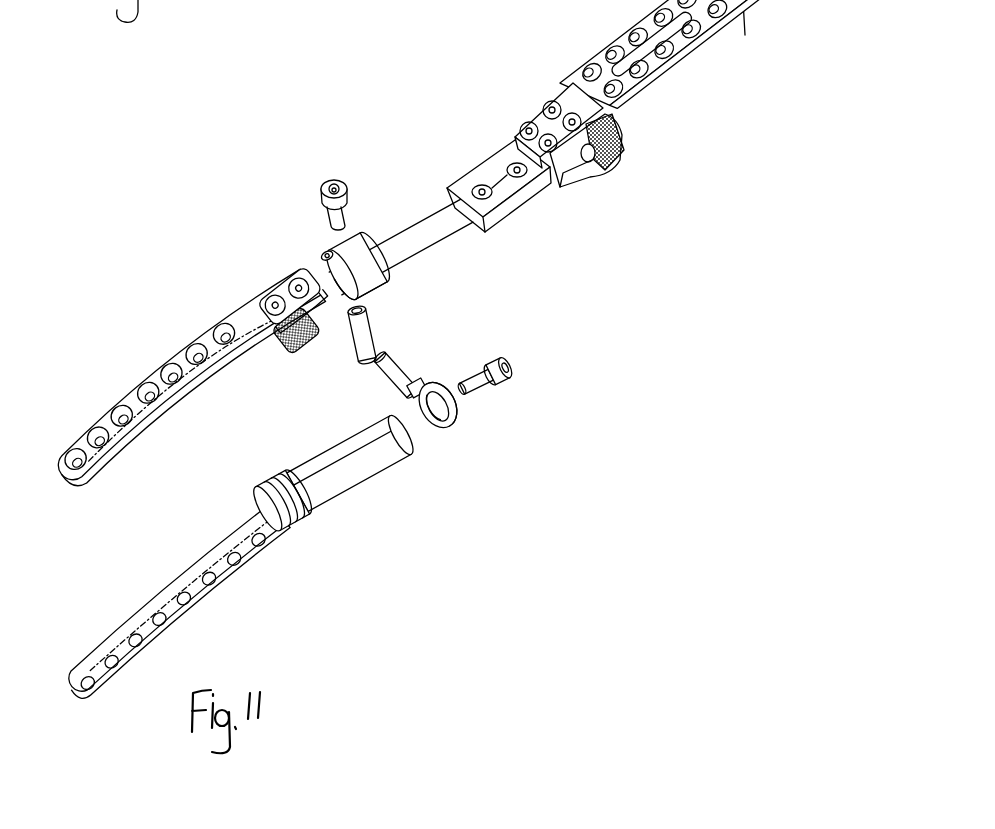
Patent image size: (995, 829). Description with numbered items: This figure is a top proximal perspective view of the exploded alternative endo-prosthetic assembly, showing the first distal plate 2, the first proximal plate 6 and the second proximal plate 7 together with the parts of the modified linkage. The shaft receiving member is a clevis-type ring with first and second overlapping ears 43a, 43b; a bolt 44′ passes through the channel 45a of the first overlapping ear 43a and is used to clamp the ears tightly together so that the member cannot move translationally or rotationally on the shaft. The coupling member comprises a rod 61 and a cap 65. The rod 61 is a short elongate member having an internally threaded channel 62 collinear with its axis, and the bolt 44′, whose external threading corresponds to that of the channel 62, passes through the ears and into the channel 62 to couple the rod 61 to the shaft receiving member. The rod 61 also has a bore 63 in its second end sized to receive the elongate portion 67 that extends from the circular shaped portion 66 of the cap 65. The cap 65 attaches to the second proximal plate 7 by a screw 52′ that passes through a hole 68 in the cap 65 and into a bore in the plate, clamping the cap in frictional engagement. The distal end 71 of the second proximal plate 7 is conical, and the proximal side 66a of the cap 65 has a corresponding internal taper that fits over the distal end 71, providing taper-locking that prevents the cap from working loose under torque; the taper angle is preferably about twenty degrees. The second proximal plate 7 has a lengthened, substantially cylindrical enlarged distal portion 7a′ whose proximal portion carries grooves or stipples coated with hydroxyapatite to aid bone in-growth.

The first distal plate 2 is at (578, 85).
The first proximal plate 6 is at (185, 360).
The second proximal plate 7 is at (220, 570).
The enlarged distal portion 7a′ is at (327, 483).
The distal end 71 is at (403, 458).
The bolt 44′ is at (342, 213).
The channel 45a is at (347, 240).
The first overlapping ear 43a is at (330, 238).
The second overlapping ear 43b is at (332, 264).
The rod 61 is at (346, 340).
The internally threaded channel 62 is at (358, 312).
The bore 63 is at (372, 358).
The cap 65 is at (464, 414).
The circular shaped portion 66 is at (440, 420).
The proximal side 66a is at (437, 424).
The elongate portion 67 is at (402, 376).
The hole 68 is at (440, 409).
The screw 52′ is at (484, 380).